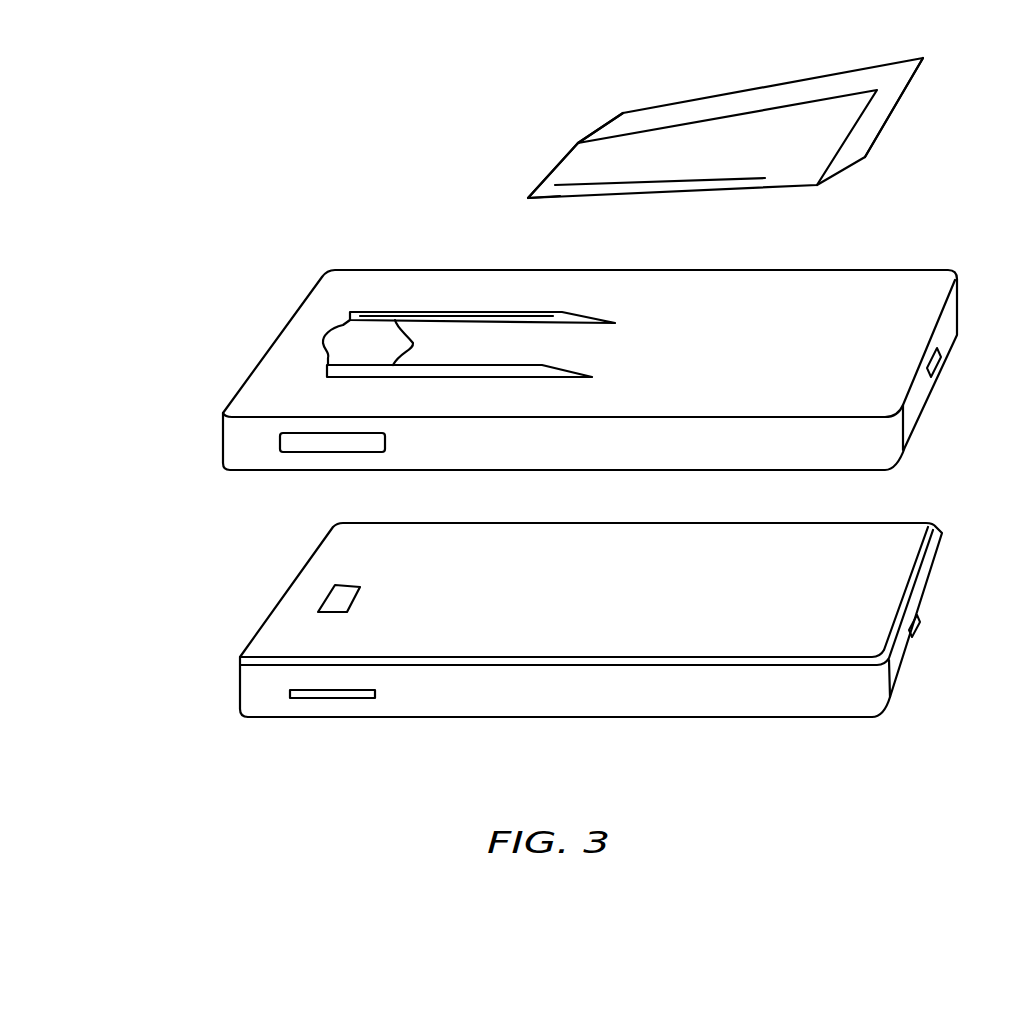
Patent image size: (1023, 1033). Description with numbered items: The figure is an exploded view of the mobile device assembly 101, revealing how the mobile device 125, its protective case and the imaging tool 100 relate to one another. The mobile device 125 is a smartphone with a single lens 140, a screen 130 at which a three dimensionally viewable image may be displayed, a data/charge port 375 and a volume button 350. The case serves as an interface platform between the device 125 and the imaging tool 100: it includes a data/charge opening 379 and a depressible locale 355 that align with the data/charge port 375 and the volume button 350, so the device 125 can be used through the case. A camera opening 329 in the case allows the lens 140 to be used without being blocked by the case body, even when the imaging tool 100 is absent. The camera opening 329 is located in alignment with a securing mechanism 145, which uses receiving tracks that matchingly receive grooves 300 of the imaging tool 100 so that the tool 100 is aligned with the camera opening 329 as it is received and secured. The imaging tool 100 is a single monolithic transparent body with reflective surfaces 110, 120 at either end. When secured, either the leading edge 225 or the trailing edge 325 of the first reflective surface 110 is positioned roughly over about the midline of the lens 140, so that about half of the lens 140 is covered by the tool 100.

The mobile device assembly 101 is at (288, 135).
The imaging tool 100 is at (823, 143).
The first reflective surface 110 is at (553, 168).
The reflective surface 120 is at (877, 108).
The leading edge 225 is at (528, 198).
The grooves 300 is at (705, 172).
The trailing edge 325 is at (623, 116).
The securing mechanism 145 is at (590, 304).
The camera opening 329 is at (372, 343).
The depressible locale 355 is at (307, 447).
The data/charge opening 379 is at (938, 366).
The mobile device 125 is at (216, 697).
The screen 130 is at (606, 747).
The lens 140 is at (333, 597).
The volume button 350 is at (337, 698).
The data/charge port 375 is at (917, 628).